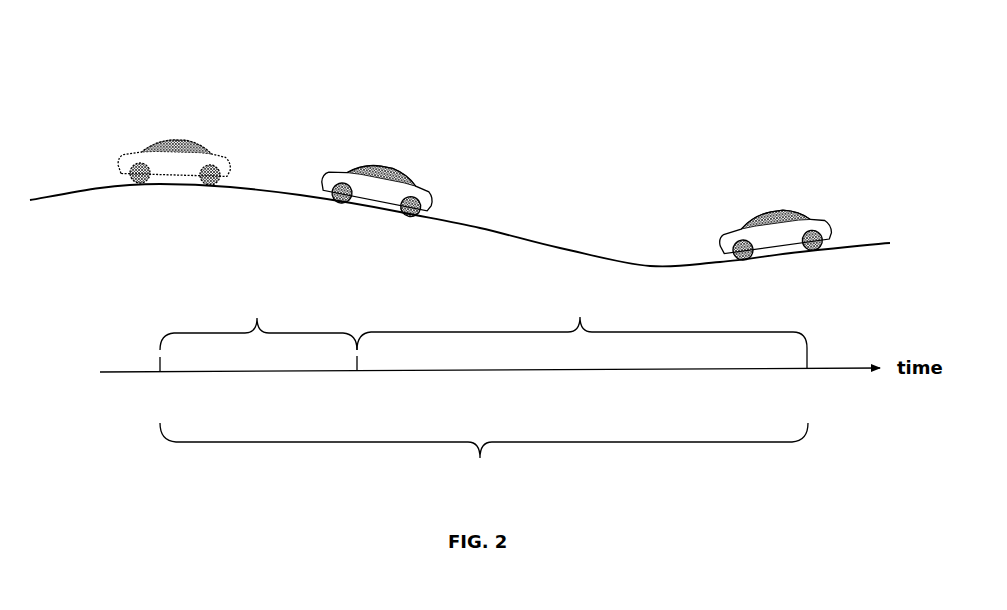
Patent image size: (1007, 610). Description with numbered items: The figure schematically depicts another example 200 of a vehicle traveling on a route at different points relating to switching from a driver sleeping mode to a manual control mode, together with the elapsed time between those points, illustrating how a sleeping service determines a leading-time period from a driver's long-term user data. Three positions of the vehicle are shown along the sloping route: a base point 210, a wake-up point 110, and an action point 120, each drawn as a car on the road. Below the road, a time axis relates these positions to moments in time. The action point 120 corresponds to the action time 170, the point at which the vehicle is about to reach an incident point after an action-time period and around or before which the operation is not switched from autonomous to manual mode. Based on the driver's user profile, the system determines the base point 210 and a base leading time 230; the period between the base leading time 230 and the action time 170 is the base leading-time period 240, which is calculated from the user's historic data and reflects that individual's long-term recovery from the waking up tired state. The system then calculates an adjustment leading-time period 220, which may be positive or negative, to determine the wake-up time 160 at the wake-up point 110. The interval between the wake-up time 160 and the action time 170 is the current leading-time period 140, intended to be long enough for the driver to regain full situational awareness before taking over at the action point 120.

The example 200 is at (815, 118).
The base point 210 is at (173, 141).
The wake-up point 110 is at (363, 158).
The action point 120 is at (772, 205).
The base leading time 230 is at (158, 386).
The wake-up time 160 is at (353, 385).
The action time 170 is at (800, 378).
The adjustment leading-time period 220 is at (257, 318).
The current leading-time period 140 is at (580, 317).
The base leading-time period 240 is at (480, 458).